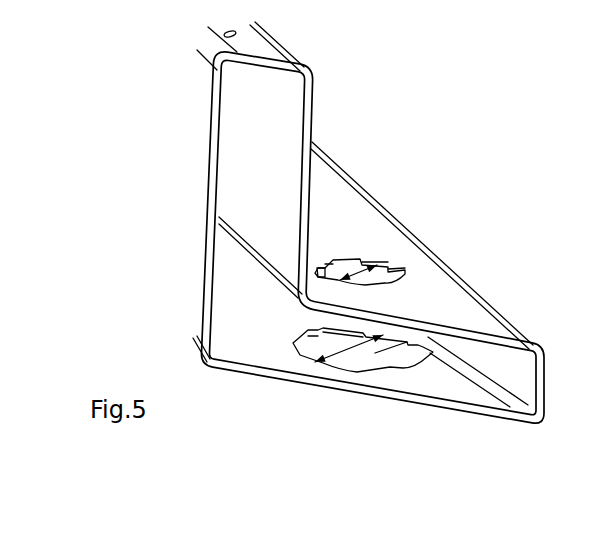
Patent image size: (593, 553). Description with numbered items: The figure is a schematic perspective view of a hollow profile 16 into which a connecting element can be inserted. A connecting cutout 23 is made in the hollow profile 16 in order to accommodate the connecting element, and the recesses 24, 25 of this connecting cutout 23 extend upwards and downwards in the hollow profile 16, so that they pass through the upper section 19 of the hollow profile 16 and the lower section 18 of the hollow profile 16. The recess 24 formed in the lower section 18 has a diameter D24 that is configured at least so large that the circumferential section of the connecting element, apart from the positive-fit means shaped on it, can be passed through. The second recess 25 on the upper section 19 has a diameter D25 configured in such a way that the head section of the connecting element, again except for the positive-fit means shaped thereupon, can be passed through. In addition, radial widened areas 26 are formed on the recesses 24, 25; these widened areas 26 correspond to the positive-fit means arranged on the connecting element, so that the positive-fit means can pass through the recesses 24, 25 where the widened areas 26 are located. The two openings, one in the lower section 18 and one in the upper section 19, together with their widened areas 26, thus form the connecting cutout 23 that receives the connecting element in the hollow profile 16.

The hollow profile 16 is at (176, 125).
The lower section 18 is at (463, 390).
The upper section 19 is at (422, 262).
The connecting cutout 23 is at (336, 366).
The recess 24 is at (455, 345).
The second recess 25 is at (394, 262).
The radial widened areas 26 is at (315, 273).
The diameter of the recess D24 is at (357, 372).
The diameter of the second recess D25 is at (355, 268).